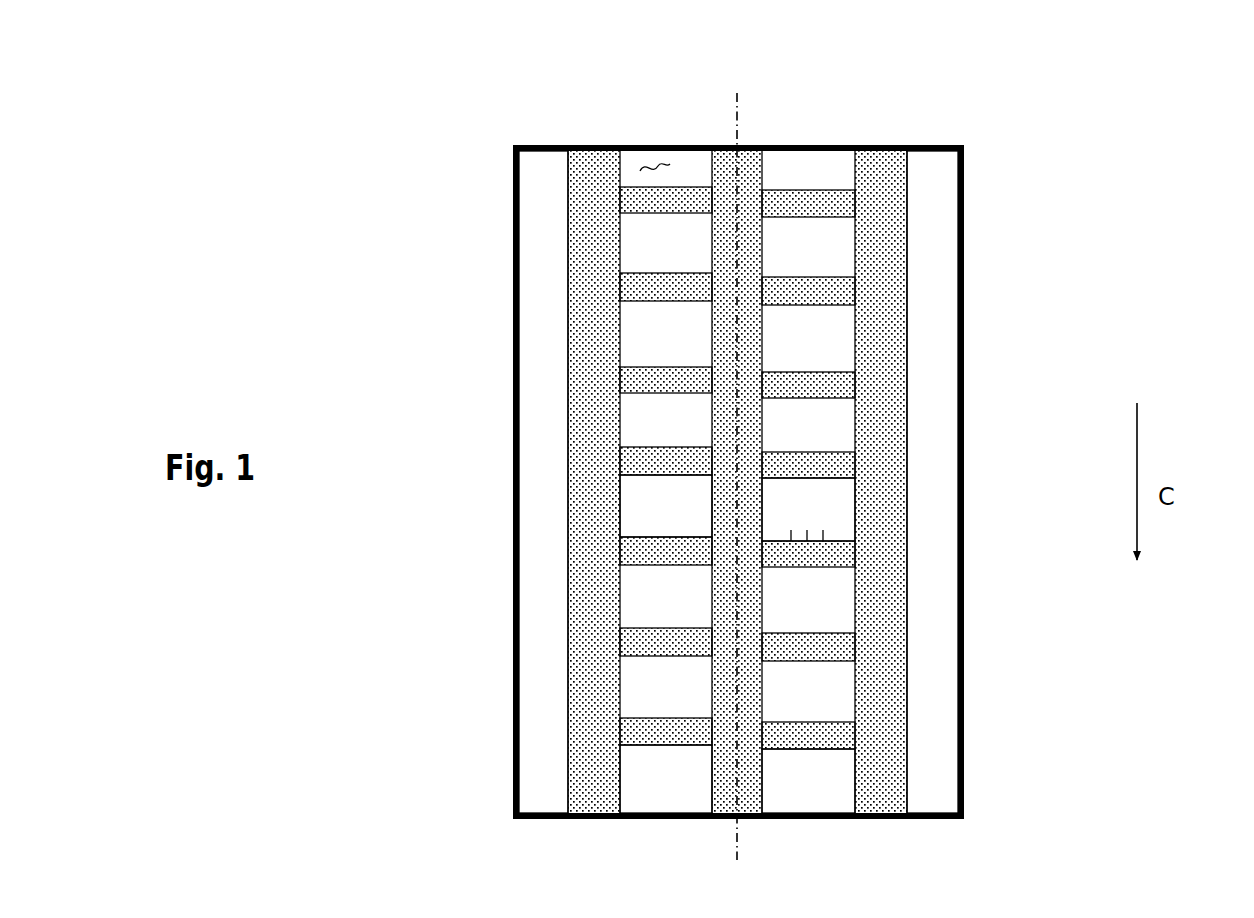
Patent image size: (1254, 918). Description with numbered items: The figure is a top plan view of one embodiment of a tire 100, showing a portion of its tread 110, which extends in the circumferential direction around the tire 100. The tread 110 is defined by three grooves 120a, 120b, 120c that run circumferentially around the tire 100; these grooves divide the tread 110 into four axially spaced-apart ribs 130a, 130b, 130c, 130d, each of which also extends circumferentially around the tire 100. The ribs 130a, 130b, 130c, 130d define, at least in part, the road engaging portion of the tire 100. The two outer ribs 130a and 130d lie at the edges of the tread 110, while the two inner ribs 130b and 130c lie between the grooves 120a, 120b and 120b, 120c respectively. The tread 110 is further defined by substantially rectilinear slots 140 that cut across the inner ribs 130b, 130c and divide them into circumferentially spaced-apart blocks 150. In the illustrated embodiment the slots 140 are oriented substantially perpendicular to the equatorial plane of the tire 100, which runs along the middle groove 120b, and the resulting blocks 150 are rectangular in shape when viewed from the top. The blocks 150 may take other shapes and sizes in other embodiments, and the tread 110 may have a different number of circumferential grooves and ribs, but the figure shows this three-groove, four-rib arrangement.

The tire 100 is at (1068, 200).
The tread 110 is at (650, 163).
The groove 120a is at (597, 793).
The groove 120b is at (727, 802).
The groove 120c is at (879, 799).
The rib 130a is at (542, 789).
The rib 130b is at (695, 795).
The rib 130c is at (842, 792).
The rib 130d is at (943, 793).
The slots 140 is at (635, 457).
The blocks 150 is at (635, 500).